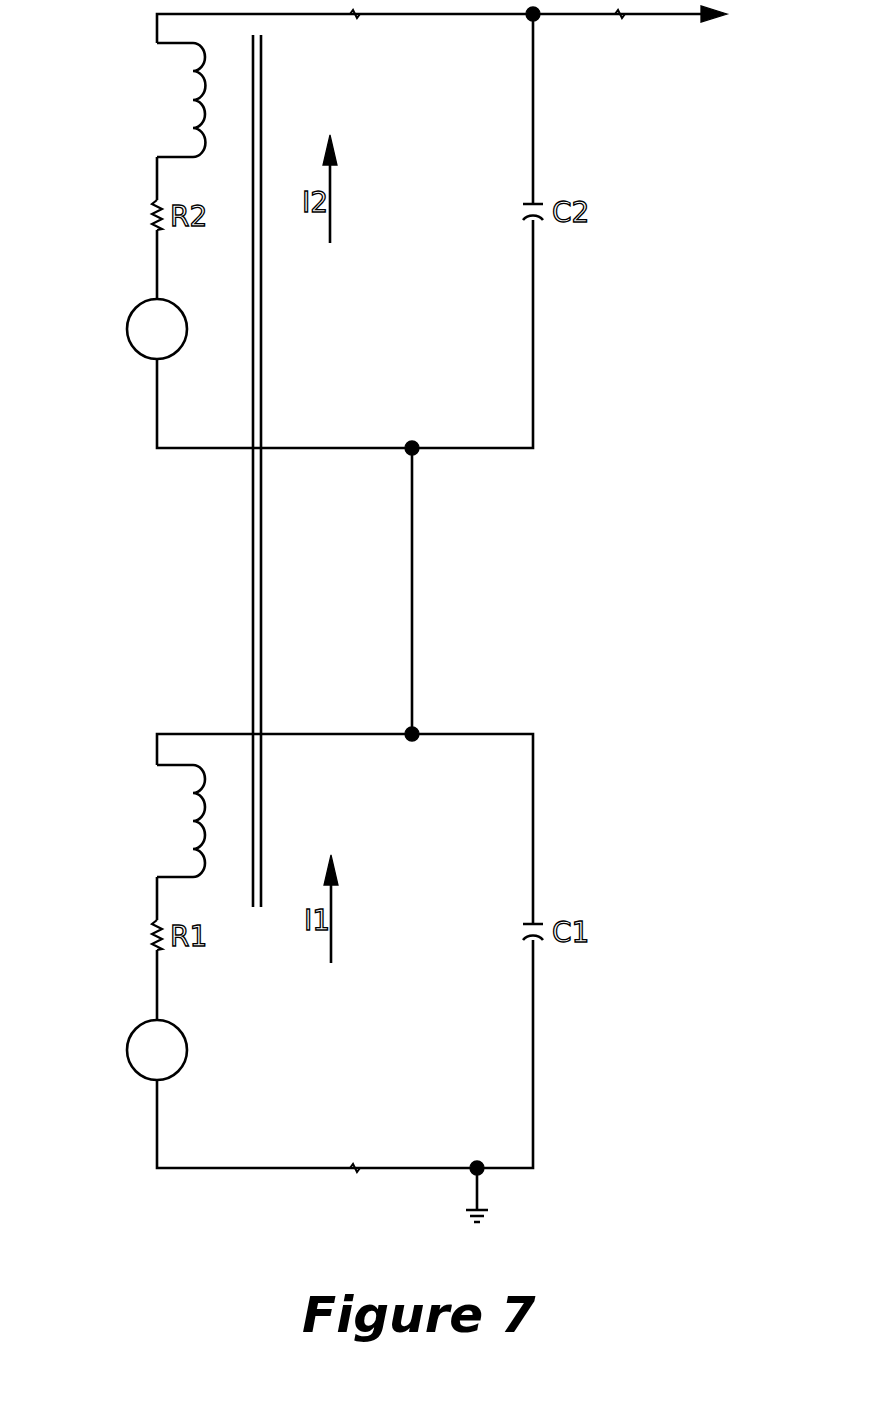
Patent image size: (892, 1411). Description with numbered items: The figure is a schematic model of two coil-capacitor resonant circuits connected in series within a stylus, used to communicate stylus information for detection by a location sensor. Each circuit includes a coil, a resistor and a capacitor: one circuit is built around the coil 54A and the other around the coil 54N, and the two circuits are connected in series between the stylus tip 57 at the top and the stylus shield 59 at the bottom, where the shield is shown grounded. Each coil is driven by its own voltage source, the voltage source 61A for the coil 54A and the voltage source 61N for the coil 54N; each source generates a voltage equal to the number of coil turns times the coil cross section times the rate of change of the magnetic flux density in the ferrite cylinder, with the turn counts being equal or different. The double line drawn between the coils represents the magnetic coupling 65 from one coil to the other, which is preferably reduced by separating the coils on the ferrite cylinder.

The stylus tip 57 is at (652, 16).
The coil 54N is at (195, 122).
The voltage source 61N is at (127, 331).
The magnetic coupling 65 is at (252, 583).
The coil 54A is at (195, 838).
The voltage source 61A is at (127, 1051).
The stylus shield 59 is at (478, 1209).